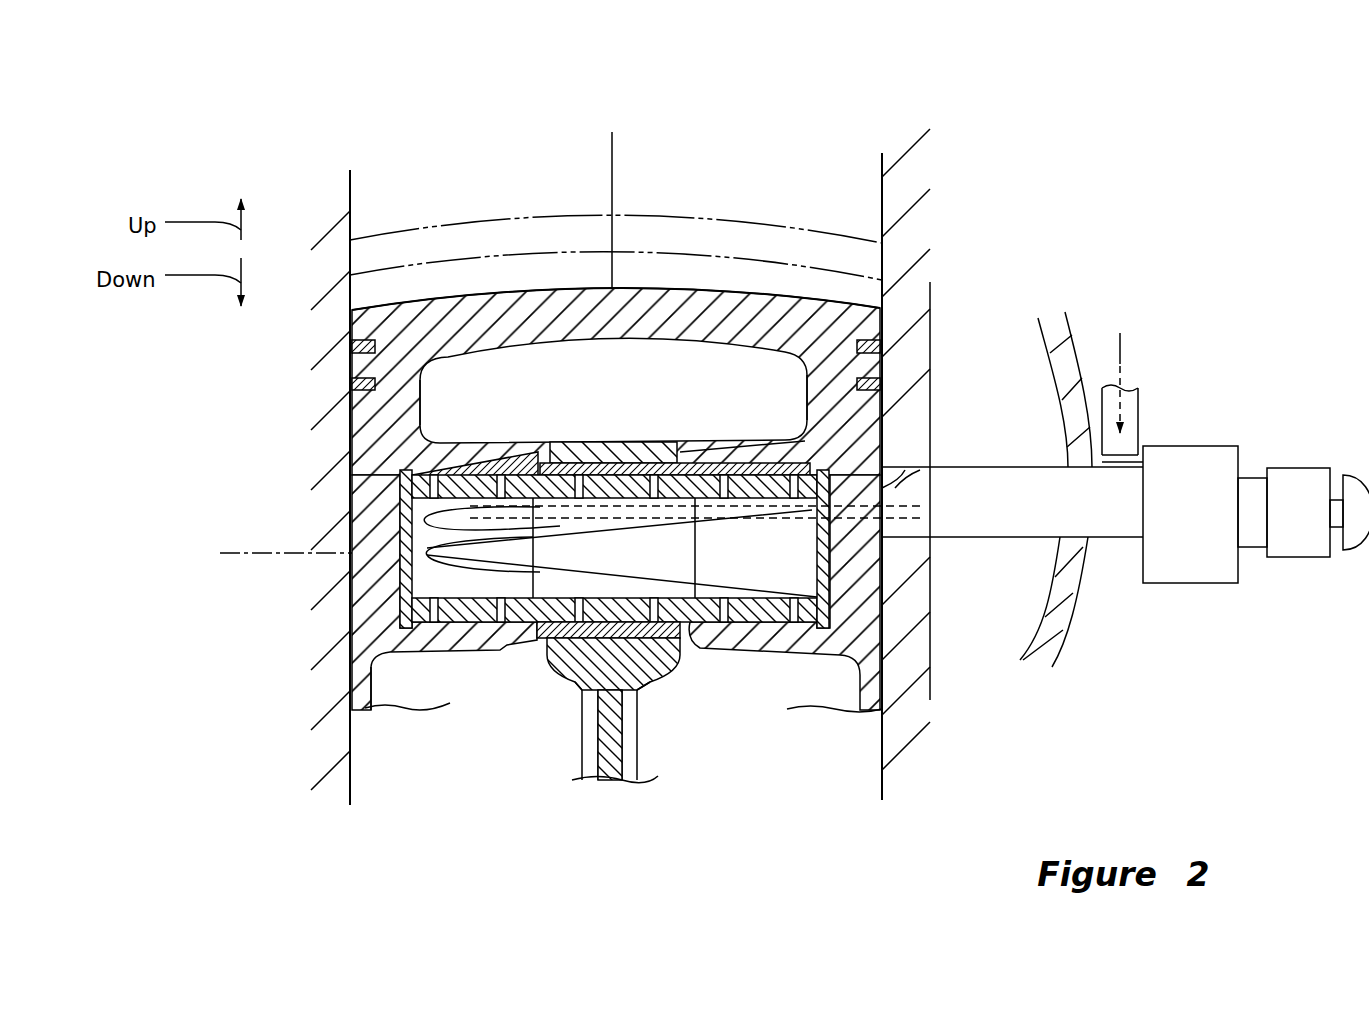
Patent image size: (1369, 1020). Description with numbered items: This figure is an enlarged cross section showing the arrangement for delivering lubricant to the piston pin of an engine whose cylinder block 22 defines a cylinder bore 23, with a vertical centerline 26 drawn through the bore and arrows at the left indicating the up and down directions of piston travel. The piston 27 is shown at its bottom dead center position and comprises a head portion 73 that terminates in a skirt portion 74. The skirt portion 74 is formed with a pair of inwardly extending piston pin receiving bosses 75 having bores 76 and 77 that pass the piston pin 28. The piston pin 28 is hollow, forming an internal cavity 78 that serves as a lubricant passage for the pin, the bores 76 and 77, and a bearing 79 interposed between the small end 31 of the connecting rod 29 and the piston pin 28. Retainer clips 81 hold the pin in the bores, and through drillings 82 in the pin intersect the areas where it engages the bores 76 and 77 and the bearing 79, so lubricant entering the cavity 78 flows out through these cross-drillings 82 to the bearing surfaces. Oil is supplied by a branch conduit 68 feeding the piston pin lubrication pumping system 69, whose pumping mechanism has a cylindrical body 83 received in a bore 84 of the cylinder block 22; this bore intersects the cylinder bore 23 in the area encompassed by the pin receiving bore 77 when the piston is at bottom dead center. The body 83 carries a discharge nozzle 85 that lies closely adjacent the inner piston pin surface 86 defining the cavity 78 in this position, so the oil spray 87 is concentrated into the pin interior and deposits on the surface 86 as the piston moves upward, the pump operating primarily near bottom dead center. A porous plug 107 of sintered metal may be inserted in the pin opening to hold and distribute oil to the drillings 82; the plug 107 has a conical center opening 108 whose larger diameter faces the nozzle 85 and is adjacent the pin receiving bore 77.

The cylinder block 22 is at (963, 128).
The cylinder bore 23 is at (882, 167).
The cylinder axis 26 is at (612, 162).
The piston 27 is at (793, 292).
The head portion 73 is at (498, 300).
The skirt portion 74 is at (375, 404).
The piston pin receiving bosses 75 is at (457, 455).
The bore 76 is at (440, 470).
The pin receiving bore 77 is at (905, 470).
The internal cavity 78 is at (608, 550).
The bearing 79 is at (575, 688).
The retainer clips 81 is at (352, 518).
The through drillings 82 is at (500, 475).
The cylindrical body 83 is at (1108, 540).
The bore 84 is at (922, 458).
The discharge nozzle 85 is at (915, 520).
The inner piston pin surface 86 is at (507, 630).
The oil spray 87 is at (663, 515).
The porous plug 107 is at (398, 595).
The conical center opening 108 is at (478, 557).
The piston pin 28 is at (503, 630).
The connecting rod 29 is at (640, 758).
The connecting rod small end 31 is at (650, 655).
The branch conduit 68 is at (1120, 366).
The pumping system 69 is at (1317, 440).